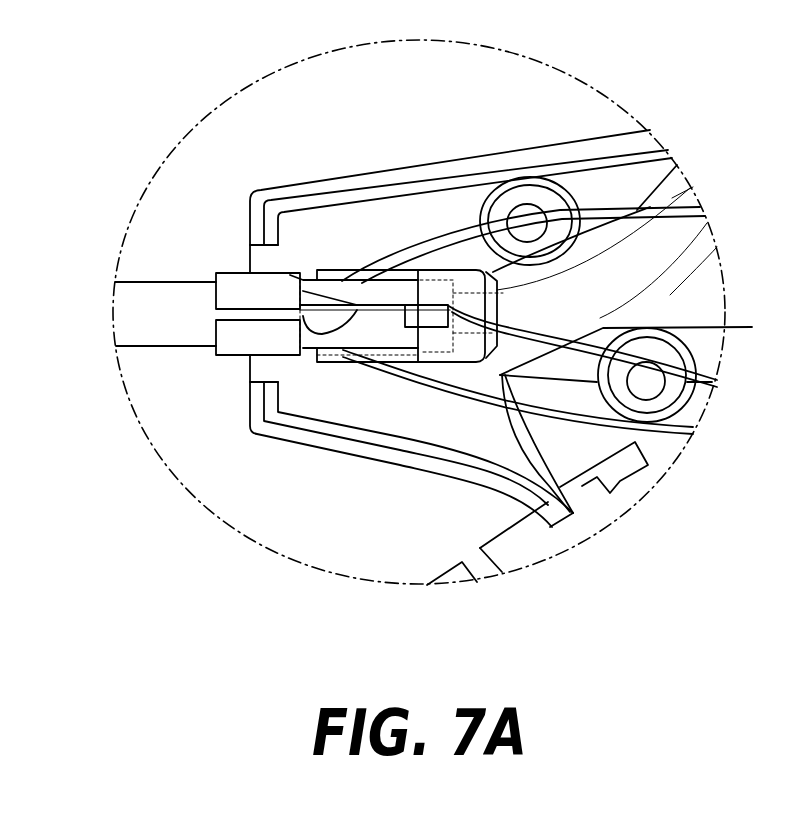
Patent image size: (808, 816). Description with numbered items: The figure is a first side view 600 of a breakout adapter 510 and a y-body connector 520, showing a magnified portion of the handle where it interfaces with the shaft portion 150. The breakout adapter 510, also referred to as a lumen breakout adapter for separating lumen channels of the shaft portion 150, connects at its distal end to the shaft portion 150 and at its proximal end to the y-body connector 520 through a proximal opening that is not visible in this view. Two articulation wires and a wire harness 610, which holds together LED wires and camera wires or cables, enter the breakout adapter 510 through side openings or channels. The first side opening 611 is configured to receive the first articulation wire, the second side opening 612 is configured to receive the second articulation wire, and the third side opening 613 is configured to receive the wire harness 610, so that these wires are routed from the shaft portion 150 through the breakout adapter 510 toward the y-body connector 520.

The first side view 600 is at (122, 84).
The shaft portion 150 is at (148, 300).
The breakout adapter 510 is at (238, 280).
The side opening 611 is at (327, 268).
The side opening 612 is at (344, 368).
The side opening 613 is at (310, 335).
The y-body connector 520 is at (618, 262).
The wire harness 610 is at (752, 327).